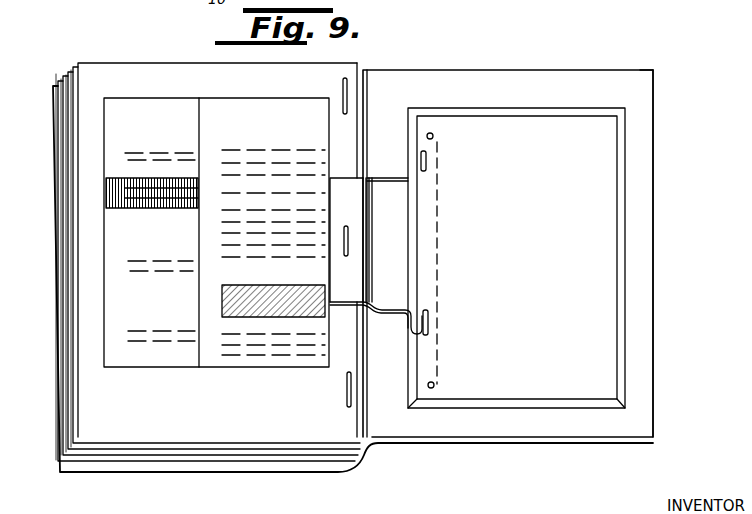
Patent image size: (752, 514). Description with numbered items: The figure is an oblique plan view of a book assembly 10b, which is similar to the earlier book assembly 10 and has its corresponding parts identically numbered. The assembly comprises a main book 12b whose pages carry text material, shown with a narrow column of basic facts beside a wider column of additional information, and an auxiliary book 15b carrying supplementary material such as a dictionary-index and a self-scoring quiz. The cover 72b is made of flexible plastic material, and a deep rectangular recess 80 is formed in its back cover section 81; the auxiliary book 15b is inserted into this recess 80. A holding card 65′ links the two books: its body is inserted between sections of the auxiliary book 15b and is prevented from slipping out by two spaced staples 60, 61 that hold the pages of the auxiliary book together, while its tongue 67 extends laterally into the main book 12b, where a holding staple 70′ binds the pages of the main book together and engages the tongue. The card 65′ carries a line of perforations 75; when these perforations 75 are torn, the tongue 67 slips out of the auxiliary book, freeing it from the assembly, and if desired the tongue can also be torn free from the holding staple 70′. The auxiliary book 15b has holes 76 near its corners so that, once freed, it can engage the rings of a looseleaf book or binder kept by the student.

The book assembly 10 is at (56, 240).
The book assembly 10b is at (672, 172).
The main book 12b is at (195, 60).
The auxiliary book 15b is at (600, 284).
The staple 60 is at (422, 158).
The staple 61 is at (419, 331).
The card 65′ is at (348, 191).
The tongue 67 is at (366, 181).
The holding staple 70′ is at (349, 240).
The cover 72b is at (282, 473).
The perforations 75 is at (442, 203).
The holes 76 is at (428, 390).
The recess 80 is at (622, 333).
The back cover section 81 is at (590, 422).